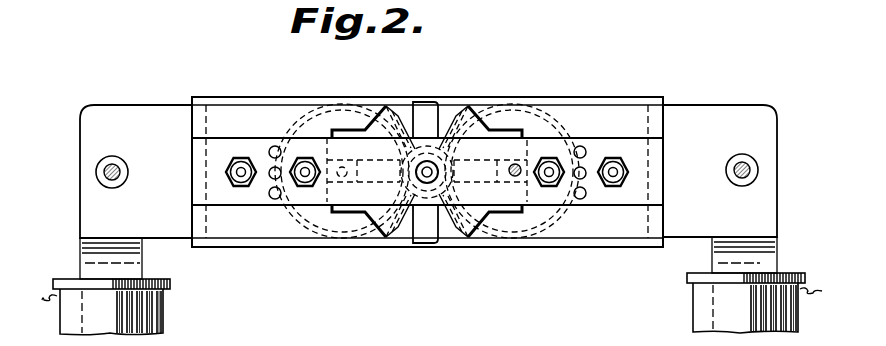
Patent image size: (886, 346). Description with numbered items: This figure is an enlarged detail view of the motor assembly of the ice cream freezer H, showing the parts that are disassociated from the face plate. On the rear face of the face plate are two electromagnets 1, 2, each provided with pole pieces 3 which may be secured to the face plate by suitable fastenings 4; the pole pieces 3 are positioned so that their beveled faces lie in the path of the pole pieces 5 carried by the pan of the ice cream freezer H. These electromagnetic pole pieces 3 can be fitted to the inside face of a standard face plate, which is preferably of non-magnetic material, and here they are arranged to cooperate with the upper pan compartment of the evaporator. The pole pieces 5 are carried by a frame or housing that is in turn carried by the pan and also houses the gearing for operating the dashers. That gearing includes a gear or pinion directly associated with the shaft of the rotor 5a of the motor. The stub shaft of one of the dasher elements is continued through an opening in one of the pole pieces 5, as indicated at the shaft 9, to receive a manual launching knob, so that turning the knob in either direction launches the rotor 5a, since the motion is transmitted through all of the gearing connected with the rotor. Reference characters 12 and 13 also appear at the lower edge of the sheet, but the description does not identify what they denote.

The electromagnet 1 is at (707, 303).
The electromagnet 2 is at (163, 314).
The pole piece 3 is at (428, 171).
The fastening 4 is at (112, 182).
The pole piece 5 is at (427, 172).
The rotor 5a is at (425, 243).
The shaft 9 is at (519, 176).
The ice cream freezer H is at (459, 96).
The element 12 is at (571, 336).
The element 13 is at (406, 340).